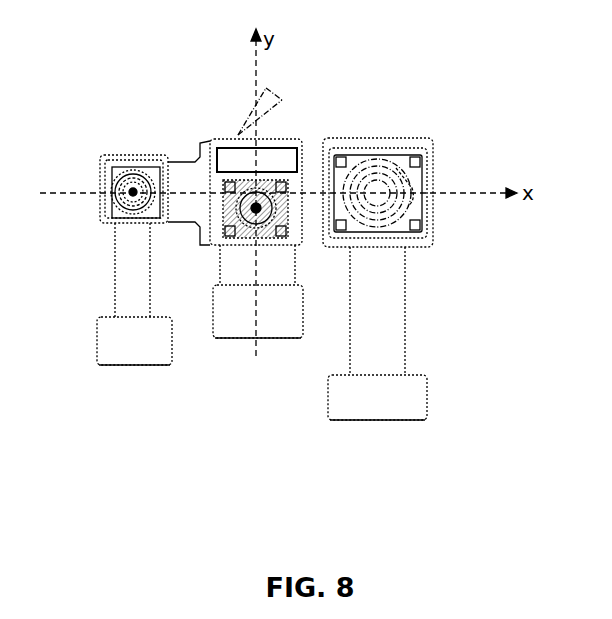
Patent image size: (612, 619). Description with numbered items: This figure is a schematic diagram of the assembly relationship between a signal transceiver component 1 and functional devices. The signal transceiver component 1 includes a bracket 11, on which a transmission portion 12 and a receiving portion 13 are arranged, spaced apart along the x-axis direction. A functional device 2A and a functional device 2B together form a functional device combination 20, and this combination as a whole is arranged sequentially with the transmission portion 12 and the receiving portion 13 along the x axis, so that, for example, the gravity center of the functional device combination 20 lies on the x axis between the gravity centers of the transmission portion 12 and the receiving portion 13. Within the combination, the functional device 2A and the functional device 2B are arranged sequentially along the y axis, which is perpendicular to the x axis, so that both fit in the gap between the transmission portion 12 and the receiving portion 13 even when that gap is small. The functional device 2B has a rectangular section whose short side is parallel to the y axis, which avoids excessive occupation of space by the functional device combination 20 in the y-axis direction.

The signal transceiver component 1 is at (120, 148).
The transmission portion 12 is at (117, 230).
The functional device combination 20 is at (291, 131).
The functional device 2B is at (182, 104).
The functional device 2A is at (364, 354).
The bracket 11 is at (238, 135).
The receiving portion 13 is at (413, 210).